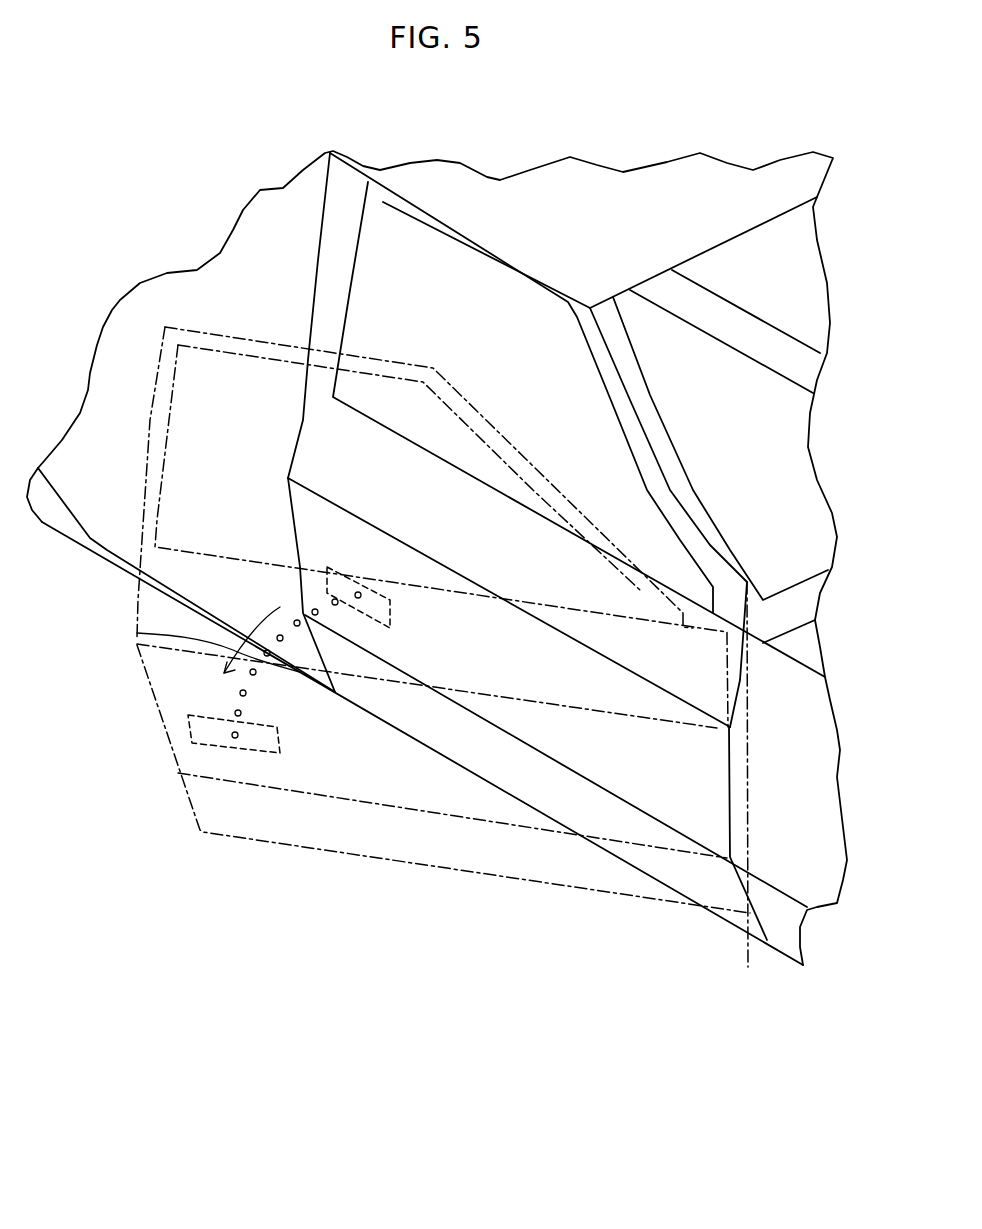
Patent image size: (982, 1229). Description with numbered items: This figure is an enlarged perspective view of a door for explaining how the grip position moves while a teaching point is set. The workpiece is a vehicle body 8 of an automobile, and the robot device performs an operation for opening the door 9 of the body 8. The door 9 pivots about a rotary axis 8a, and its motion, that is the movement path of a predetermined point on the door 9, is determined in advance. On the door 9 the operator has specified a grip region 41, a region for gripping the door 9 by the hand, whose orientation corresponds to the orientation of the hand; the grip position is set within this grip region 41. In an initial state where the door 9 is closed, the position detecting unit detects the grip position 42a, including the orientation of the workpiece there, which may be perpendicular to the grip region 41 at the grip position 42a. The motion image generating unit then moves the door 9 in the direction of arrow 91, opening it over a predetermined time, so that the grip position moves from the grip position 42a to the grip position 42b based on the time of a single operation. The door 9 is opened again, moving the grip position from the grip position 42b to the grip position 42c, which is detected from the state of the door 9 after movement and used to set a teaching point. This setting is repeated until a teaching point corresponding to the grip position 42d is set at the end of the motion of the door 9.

The vehicle body 8 is at (677, 177).
The rotary axis 8a is at (748, 960).
The door 9 is at (528, 883).
The grip region 41 is at (253, 753).
The grip position 42a is at (360, 593).
The grip position 42b is at (335, 600).
The grip position 42c is at (315, 610).
The grip position 42d is at (233, 737).
The arrow 91 is at (137, 633).